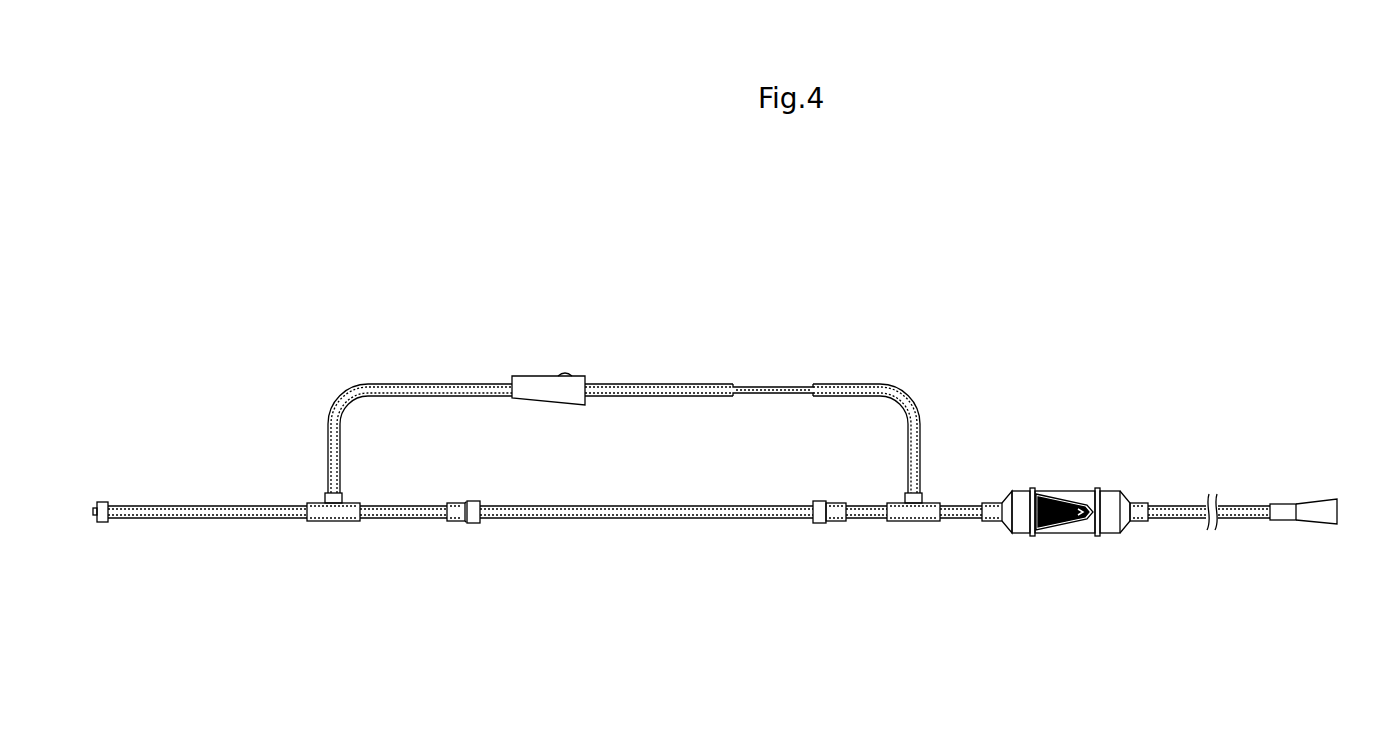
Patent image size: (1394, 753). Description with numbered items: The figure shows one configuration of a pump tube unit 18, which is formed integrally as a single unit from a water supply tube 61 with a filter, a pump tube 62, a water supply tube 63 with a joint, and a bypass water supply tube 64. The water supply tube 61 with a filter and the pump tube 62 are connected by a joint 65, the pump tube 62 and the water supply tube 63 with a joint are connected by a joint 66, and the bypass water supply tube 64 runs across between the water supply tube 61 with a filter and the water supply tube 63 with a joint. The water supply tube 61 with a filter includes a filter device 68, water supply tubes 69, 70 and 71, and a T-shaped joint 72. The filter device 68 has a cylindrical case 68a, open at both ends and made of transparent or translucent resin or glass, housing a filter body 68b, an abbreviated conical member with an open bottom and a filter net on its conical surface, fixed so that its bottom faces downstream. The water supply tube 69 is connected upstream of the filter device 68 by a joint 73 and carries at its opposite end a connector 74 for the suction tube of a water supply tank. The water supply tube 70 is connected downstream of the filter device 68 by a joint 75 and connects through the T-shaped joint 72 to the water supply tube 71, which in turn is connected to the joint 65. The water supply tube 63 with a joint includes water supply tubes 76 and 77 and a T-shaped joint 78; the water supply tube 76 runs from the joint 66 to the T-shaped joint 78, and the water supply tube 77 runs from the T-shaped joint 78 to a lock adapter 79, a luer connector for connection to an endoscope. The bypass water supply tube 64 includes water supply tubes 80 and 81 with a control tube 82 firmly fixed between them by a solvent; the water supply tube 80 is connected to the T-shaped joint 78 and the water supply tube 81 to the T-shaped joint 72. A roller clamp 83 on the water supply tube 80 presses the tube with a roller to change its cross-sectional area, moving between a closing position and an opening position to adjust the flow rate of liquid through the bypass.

The pump tube unit 18 is at (1330, 274).
The water supply tube with a filter 61 is at (1335, 686).
The pump tube 62 is at (638, 520).
The water supply tube with a joint 63 is at (430, 592).
The bypass water supply tube 64 is at (905, 297).
The joint 65 is at (836, 500).
The joint 66 is at (461, 500).
The filter device 68 is at (1070, 582).
The case 68a is at (1086, 535).
The filter body 68b is at (1056, 535).
The water supply tube 69 is at (1238, 520).
The water supply tube 70 is at (961, 520).
The water supply tube 71 is at (866, 520).
The T-shaped joint 72 is at (913, 522).
The joint 73 is at (1134, 534).
The connector 74 is at (1313, 522).
The joint 75 is at (1016, 534).
The water supply tube 76 is at (406, 520).
The water supply tube 77 is at (210, 520).
The T-shaped joint 78 is at (336, 522).
The lock adapter 79 is at (104, 524).
The water supply tube 80 is at (455, 386).
The water supply tube 81 is at (877, 388).
The control tube 82 is at (771, 386).
The roller clamp 83 is at (529, 384).